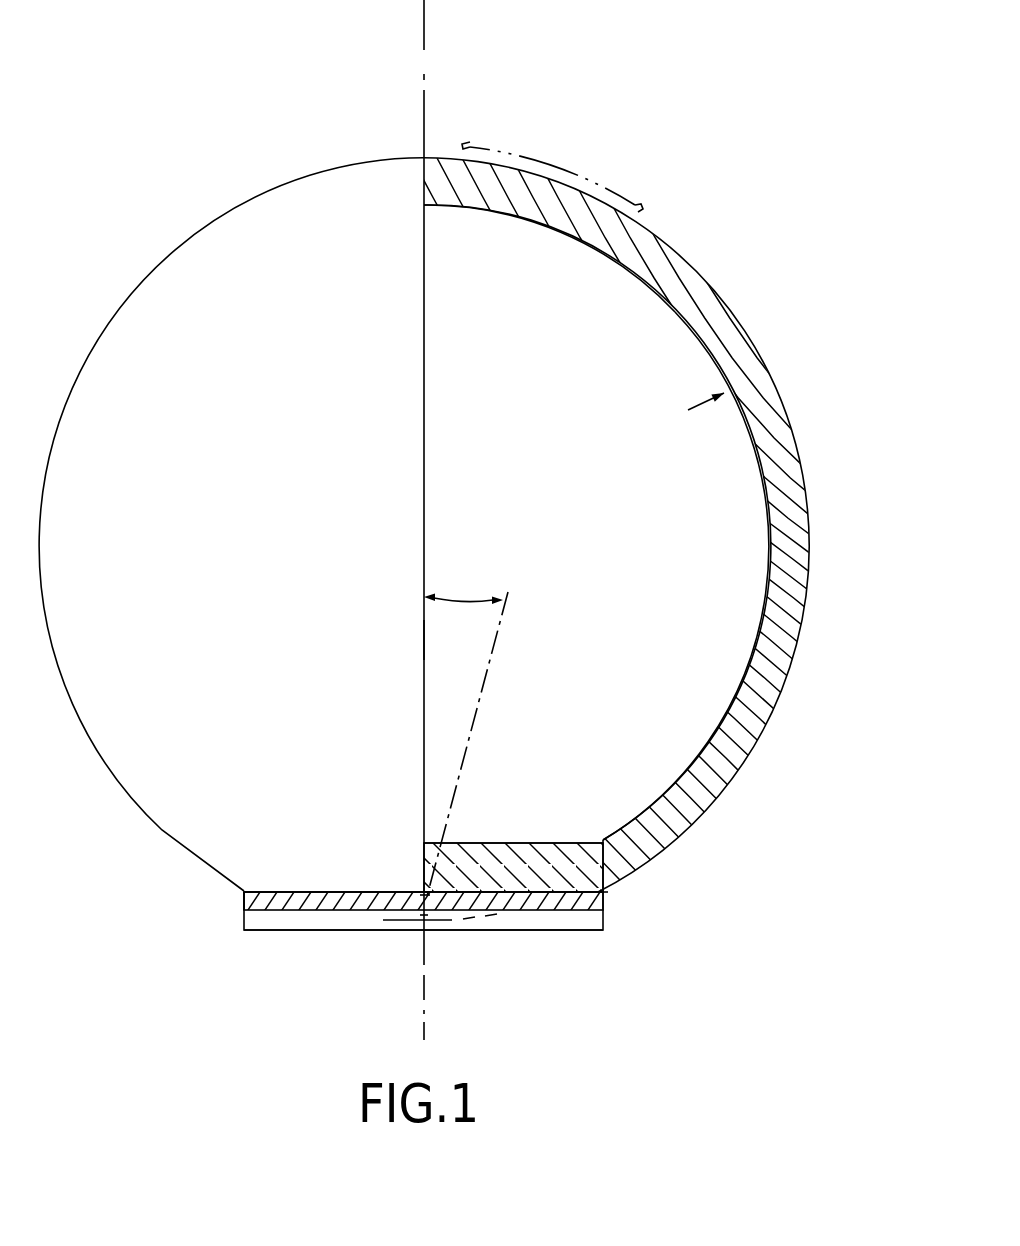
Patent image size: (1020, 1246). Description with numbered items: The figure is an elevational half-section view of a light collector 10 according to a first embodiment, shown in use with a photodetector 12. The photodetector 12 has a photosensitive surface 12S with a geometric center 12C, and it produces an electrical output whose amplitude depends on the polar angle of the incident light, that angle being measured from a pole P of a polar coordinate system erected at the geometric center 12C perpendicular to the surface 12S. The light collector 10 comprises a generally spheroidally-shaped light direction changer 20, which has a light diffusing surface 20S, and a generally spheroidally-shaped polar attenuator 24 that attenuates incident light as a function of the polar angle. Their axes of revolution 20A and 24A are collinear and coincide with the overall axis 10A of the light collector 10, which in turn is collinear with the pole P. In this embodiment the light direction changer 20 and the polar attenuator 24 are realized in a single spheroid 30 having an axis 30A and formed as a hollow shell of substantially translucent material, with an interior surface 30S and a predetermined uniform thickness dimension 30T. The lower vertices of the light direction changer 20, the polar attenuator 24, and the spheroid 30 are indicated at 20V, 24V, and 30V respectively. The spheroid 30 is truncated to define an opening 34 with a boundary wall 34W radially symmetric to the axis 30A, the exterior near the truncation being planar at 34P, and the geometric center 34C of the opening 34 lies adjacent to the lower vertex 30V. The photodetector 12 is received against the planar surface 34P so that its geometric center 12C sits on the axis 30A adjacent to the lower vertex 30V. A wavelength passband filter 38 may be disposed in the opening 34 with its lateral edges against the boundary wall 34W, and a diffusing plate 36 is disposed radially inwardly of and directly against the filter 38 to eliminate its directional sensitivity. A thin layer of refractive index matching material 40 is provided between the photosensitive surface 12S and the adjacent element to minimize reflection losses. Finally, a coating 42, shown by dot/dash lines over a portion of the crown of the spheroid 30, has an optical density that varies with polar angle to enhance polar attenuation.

The light collector 10 is at (230, 172).
The overall axis of the light collector 10A is at (509, 520).
The axis of revolution of the light direction changer 20A is at (509, 520).
The axis of revolution of the polar attenuator 24A is at (509, 520).
The axis of the spheroid 30A is at (424, 62).
The photodetector 12 is at (280, 922).
The photosensitive surface 12S is at (283, 892).
The geometric center of the photosensitive surface 12C is at (383, 922).
The light direction changer 20 is at (510, 525).
The light diffusing surface 20S is at (675, 312).
The polar attenuator 24 is at (780, 212).
The spheroid 30 is at (510, 525).
The interior surface of the shell 30S is at (713, 726).
The thickness dimension of the shell 30T is at (768, 372).
The opening 34 is at (478, 785).
The planar surface 34P is at (244, 912).
The geometric center of the opening 34C is at (427, 895).
The boundary wall of the opening 34W is at (596, 862).
The diffusing plate 36 is at (548, 842).
The wavelength passband filter 38 is at (568, 912).
The layer of refractive index matching material 40 is at (605, 913).
The coating 42 is at (568, 172).
The lower vertex of the light direction changer 20V is at (296, 969).
The lower vertex of the polar attenuator 24V is at (296, 969).
The lower vertex of the spheroid 30V is at (422, 915).
The pole P is at (424, 641).